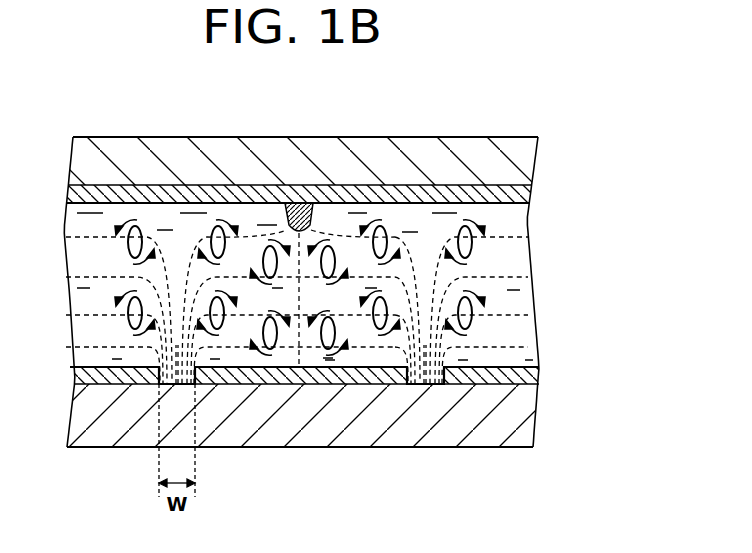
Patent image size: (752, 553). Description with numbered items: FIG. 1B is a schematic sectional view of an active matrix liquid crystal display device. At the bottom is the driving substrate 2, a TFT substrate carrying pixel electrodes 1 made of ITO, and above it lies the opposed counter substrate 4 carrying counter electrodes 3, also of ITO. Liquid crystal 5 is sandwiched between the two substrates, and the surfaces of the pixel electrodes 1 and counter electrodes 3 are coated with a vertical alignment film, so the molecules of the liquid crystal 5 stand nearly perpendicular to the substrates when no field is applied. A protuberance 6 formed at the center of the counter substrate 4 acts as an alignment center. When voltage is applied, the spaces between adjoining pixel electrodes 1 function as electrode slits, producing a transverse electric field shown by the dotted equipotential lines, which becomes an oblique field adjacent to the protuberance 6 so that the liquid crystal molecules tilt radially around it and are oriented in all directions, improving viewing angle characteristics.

The pixel electrodes 1 is at (515, 377).
The driving substrate 2 is at (592, 367).
The counter electrodes 3 is at (510, 199).
The counter substrate 4 is at (592, 137).
The liquid crystal 5 is at (512, 255).
The protuberance 6 is at (316, 221).